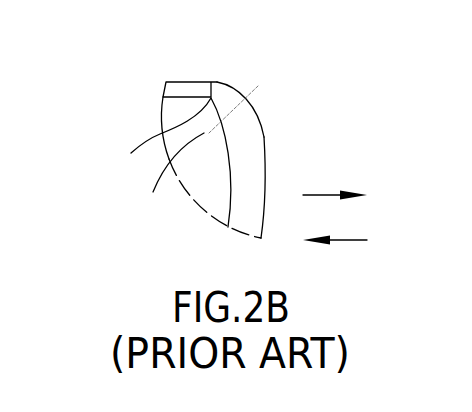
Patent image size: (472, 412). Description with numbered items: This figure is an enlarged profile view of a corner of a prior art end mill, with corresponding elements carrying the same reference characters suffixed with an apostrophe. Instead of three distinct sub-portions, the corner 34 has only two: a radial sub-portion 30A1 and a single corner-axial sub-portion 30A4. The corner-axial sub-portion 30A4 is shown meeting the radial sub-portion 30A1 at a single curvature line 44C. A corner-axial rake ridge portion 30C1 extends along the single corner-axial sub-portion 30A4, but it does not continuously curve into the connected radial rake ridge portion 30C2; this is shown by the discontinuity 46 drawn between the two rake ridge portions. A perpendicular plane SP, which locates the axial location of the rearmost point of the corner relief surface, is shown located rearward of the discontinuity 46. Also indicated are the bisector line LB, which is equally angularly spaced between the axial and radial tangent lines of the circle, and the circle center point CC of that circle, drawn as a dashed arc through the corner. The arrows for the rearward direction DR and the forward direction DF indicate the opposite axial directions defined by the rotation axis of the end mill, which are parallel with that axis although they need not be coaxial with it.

The corner 34 is at (183, 46).
The radial sub-portion 30A1 is at (180, 90).
The corner-axial sub-portion 30A4 is at (247, 116).
The corner-axial rake ridge portion 30C1 is at (228, 137).
The radial rake ridge portion 30C2 is at (163, 97).
The single curvature line 44C is at (217, 82).
The discontinuity 46 is at (158, 142).
The perpendicular plane SP is at (209, 132).
The bisector line LB is at (250, 97).
The circle center point CC is at (202, 198).
The rearward direction DR is at (335, 179).
The forward direction DF is at (335, 225).